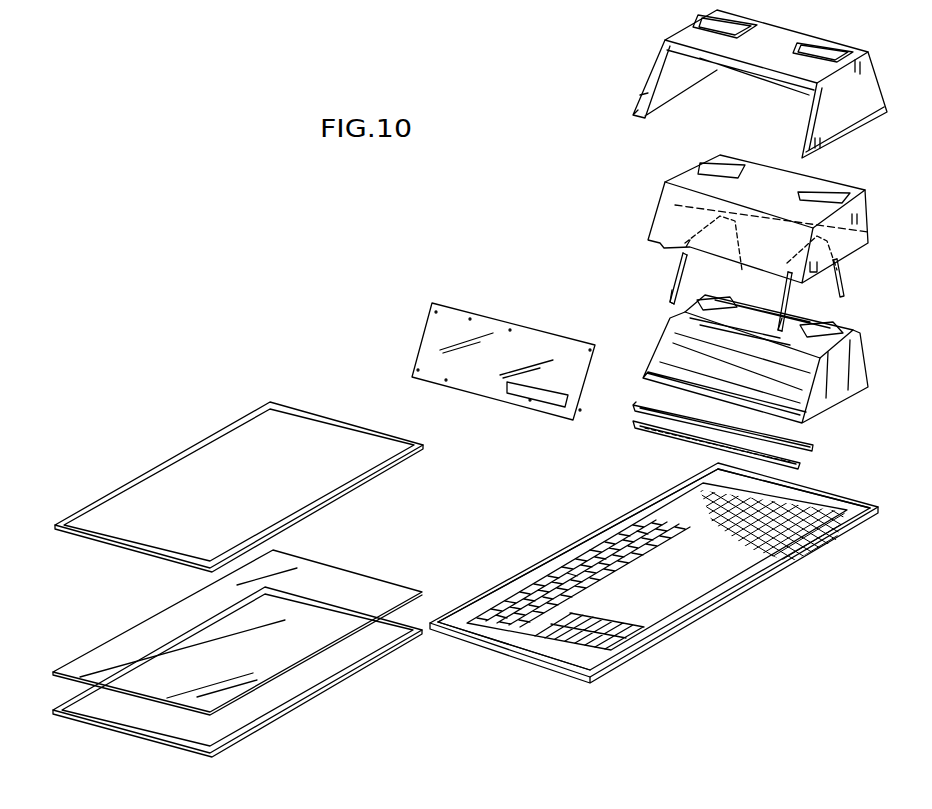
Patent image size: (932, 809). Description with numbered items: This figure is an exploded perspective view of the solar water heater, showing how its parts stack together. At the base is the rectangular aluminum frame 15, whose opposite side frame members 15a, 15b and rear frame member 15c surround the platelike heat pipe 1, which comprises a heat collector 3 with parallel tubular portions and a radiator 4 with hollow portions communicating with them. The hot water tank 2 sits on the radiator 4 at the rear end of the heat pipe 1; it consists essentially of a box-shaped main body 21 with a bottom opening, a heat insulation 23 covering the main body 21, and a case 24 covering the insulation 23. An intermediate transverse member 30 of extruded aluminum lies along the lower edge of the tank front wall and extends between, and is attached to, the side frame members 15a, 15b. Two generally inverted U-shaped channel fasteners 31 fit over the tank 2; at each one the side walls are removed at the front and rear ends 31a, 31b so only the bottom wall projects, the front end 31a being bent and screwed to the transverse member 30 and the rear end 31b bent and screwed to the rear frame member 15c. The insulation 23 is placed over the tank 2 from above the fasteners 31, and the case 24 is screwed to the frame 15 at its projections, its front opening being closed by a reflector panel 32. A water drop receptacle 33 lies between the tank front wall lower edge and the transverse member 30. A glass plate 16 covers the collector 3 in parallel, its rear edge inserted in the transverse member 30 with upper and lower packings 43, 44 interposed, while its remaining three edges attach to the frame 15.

The platelike heat pipe 1 is at (648, 593).
The hot water tank 2 is at (785, 359).
The heat collector 3 is at (712, 597).
The radiator 4 is at (810, 543).
The rectangular frame 15 is at (677, 531).
The side frame member 15a is at (587, 537).
The side frame member 15b is at (683, 620).
The rear frame member 15c is at (853, 500).
The glass plate 16 is at (333, 577).
The main body 21 is at (858, 377).
The heat insulation 23 is at (860, 230).
The case 24 is at (866, 97).
The intermediate transverse member 30 is at (802, 465).
The fastener 31 is at (680, 268).
The front end 31a is at (668, 302).
The rear end 31b is at (740, 272).
The reflector panel 32 is at (517, 327).
The water drop receptacle 33 is at (813, 443).
The upper packing 43 is at (328, 422).
The lower packing 44 is at (353, 670).